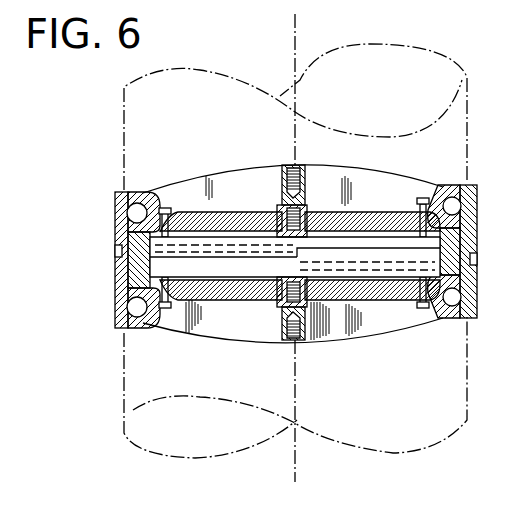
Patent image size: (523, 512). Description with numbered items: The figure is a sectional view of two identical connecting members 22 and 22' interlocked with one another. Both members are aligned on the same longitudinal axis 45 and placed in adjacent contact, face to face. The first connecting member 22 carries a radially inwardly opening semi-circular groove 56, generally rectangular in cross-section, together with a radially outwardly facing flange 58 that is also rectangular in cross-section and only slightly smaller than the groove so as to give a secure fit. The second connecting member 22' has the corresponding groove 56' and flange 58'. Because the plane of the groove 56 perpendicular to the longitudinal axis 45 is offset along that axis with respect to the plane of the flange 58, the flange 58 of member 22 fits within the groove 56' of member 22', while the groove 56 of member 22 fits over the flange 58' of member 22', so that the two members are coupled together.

The longitudinal axis 45 is at (295, 63).
The connecting member 22 is at (100, 247).
The second connecting member 22' is at (100, 332).
The groove 56 is at (368, 211).
The groove of second connecting member 56' is at (223, 306).
The flange 58 is at (300, 193).
The flange of second connecting member 58' is at (300, 323).